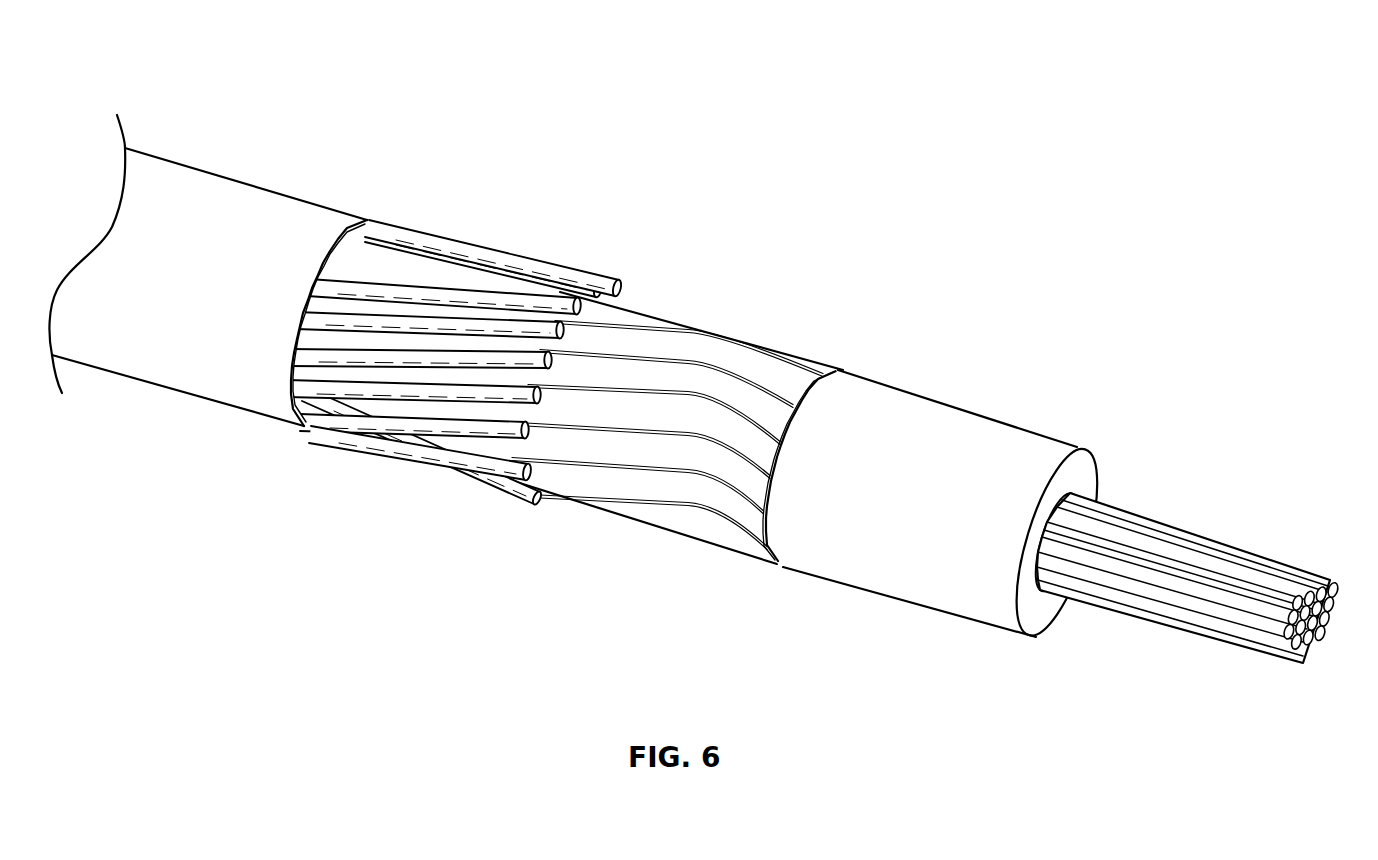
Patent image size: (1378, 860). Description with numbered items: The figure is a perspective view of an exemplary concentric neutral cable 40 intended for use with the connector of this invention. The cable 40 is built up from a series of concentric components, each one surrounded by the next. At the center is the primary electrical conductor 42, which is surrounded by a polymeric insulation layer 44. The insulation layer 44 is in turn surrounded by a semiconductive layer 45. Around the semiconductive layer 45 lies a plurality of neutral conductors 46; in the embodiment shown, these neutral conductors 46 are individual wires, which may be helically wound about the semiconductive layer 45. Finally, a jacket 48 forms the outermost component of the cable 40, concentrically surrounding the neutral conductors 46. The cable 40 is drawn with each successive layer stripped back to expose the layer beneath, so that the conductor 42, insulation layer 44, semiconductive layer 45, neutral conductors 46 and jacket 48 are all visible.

The cable 40 is at (169, 76).
The primary electrical conductor 42 is at (1167, 573).
The polymeric insulation layer 44 is at (938, 422).
The semiconductive layer 45 is at (730, 348).
The neutral conductors 46 is at (447, 327).
The jacket 48 is at (192, 184).